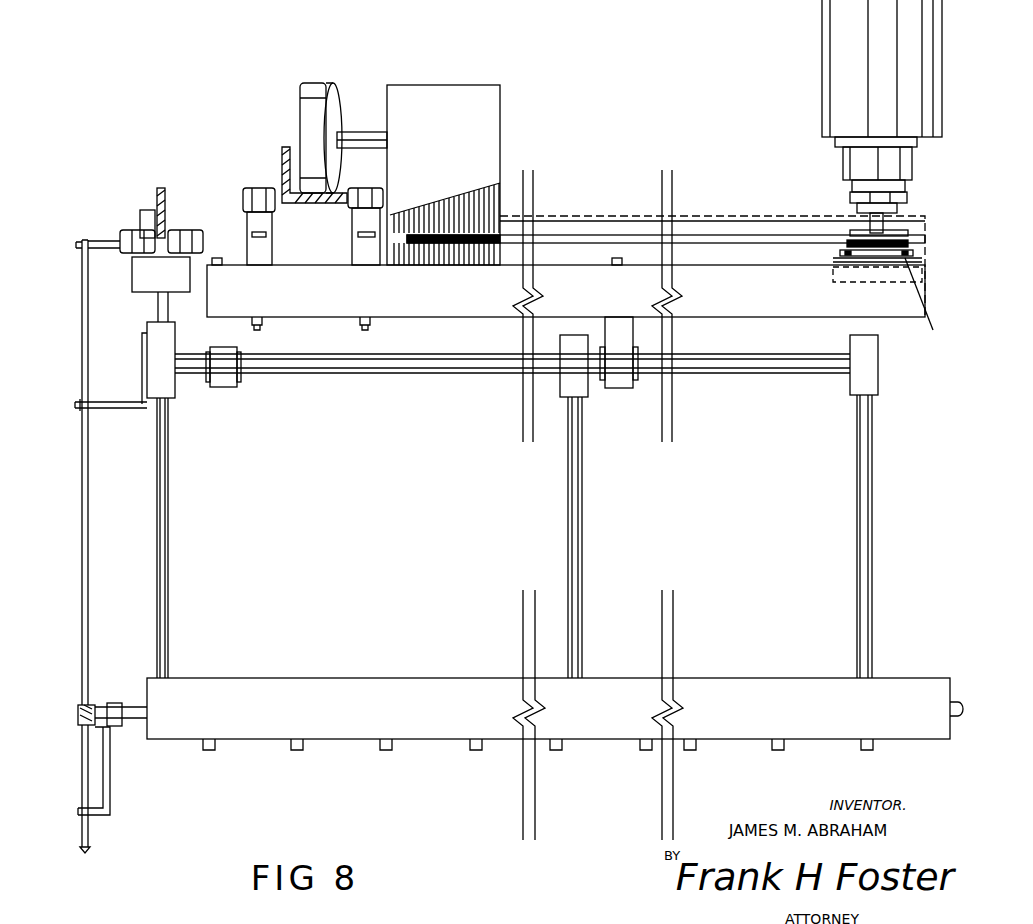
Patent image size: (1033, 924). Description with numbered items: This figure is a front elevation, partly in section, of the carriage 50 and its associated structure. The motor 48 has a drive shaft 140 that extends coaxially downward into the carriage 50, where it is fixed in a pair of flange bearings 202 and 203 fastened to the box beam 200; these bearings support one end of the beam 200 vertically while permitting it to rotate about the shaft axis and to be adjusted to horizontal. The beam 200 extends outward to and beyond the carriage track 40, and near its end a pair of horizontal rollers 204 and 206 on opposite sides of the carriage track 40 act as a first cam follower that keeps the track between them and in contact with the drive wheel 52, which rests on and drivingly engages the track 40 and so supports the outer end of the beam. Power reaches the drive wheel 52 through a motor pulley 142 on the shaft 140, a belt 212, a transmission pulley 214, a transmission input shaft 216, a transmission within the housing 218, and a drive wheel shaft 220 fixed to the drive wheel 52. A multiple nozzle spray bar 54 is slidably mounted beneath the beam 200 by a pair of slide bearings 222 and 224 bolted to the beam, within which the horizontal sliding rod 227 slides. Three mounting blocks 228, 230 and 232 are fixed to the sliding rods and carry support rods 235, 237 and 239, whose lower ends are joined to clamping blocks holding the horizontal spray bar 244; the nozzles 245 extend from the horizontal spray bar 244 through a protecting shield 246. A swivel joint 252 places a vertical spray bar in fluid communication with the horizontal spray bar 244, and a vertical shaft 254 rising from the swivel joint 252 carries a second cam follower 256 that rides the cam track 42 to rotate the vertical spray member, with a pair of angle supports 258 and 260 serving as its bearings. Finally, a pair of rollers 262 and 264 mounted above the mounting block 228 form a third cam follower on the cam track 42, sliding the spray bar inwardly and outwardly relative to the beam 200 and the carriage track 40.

The carriage track 40 is at (280, 148).
The cam track 42 is at (160, 188).
The motor 48 is at (841, 90).
The carriage 50 is at (711, 198).
The drive wheel 52 is at (318, 88).
The multiple nozzle spray bar 54 is at (280, 678).
The drive shaft 140 is at (903, 213).
The motor pulley 142 is at (858, 232).
The box beam 200 is at (753, 293).
The flange bearing 202 is at (894, 307).
The flange bearing 203 is at (885, 278).
The horizontal roller 204 is at (358, 186).
The horizontal roller 206 is at (245, 192).
The belt 212 is at (601, 240).
The transmission pulley 214 is at (411, 243).
The transmission input shaft 216 is at (483, 180).
The housing 218 is at (480, 120).
The drive wheel shaft 220 is at (373, 140).
The slide bearing 222 is at (217, 0).
The slide bearing 224 is at (617, 392).
The horizontal sliding rod 227 is at (374, 366).
The mounting block 228 is at (167, 388).
The mounting block 230 is at (568, 385).
The mounting block 232 is at (858, 388).
The support rod 235 is at (868, 498).
The support rod 237 is at (575, 505).
The support rod 239 is at (162, 512).
The horizontal spray bar 244 is at (134, 705).
The nozzle 245 is at (384, 752).
The protecting shield 246 is at (453, 703).
The swivel joint 252 is at (88, 705).
The vertical shaft 254 is at (86, 342).
The second cam follower 256 is at (143, 215).
The angle support 258 is at (104, 408).
The angle support 260 is at (107, 778).
The roller 262 is at (128, 235).
The roller 264 is at (189, 236).